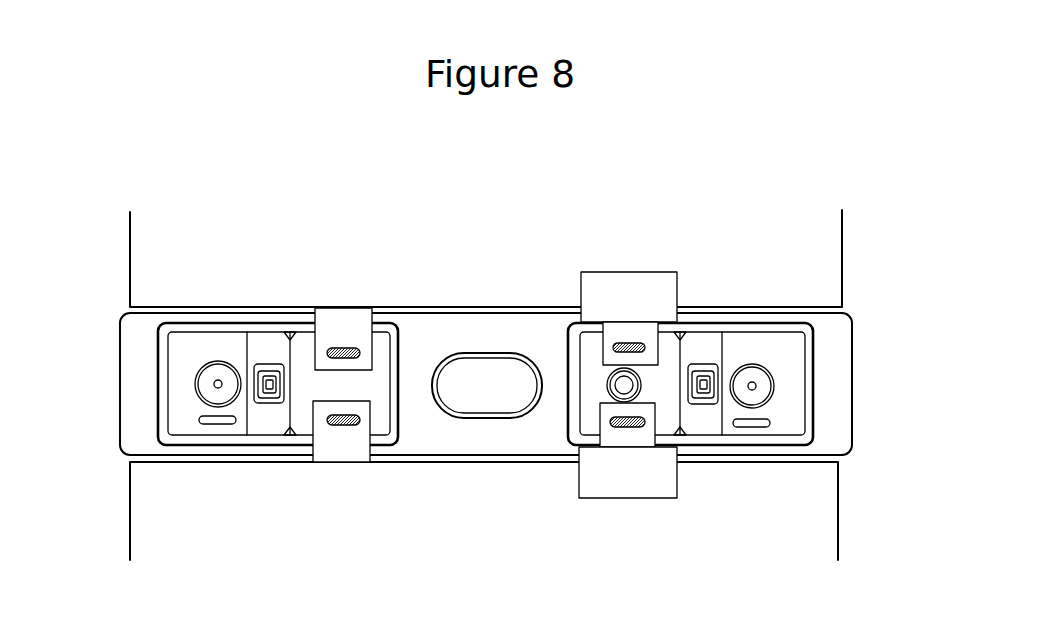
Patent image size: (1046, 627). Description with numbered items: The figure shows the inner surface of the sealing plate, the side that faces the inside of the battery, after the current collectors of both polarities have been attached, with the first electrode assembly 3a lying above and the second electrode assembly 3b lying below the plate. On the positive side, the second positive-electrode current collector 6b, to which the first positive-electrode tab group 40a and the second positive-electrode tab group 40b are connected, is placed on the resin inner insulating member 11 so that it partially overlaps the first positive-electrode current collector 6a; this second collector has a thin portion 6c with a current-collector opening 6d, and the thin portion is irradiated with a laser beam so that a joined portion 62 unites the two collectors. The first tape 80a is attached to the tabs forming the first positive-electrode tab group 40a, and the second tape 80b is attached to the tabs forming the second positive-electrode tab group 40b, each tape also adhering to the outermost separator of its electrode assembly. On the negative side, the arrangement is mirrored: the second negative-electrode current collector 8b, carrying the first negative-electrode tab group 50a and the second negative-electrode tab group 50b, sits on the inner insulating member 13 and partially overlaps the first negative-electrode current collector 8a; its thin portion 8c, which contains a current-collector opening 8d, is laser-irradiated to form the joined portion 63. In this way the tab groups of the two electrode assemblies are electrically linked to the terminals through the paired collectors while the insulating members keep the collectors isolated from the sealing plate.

The first electrode assembly 3a is at (850, 240).
The second electrode assembly 3b is at (845, 520).
The first positive-electrode current collector 6a is at (775, 359).
The second positive-electrode current collector 6b is at (592, 383).
The thin portion 6c is at (698, 400).
The current-collector opening 6d is at (706, 368).
The first negative-electrode current collector 8a is at (205, 352).
The second negative-electrode current collector 8b is at (372, 380).
The thin portion 8c is at (260, 398).
The current-collector opening 8d is at (272, 365).
The inner insulating member 11 is at (810, 420).
The inner insulating member 13 is at (170, 437).
The first positive-electrode tab group 40a is at (627, 333).
The second positive-electrode tab group 40b is at (615, 437).
The first negative-electrode tab group 50a is at (342, 332).
The second negative-electrode tab group 50b is at (340, 443).
The joined portion 62 is at (708, 388).
The joined portion 63 is at (271, 390).
The first tape 80a is at (653, 292).
The second tape 80b is at (627, 478).